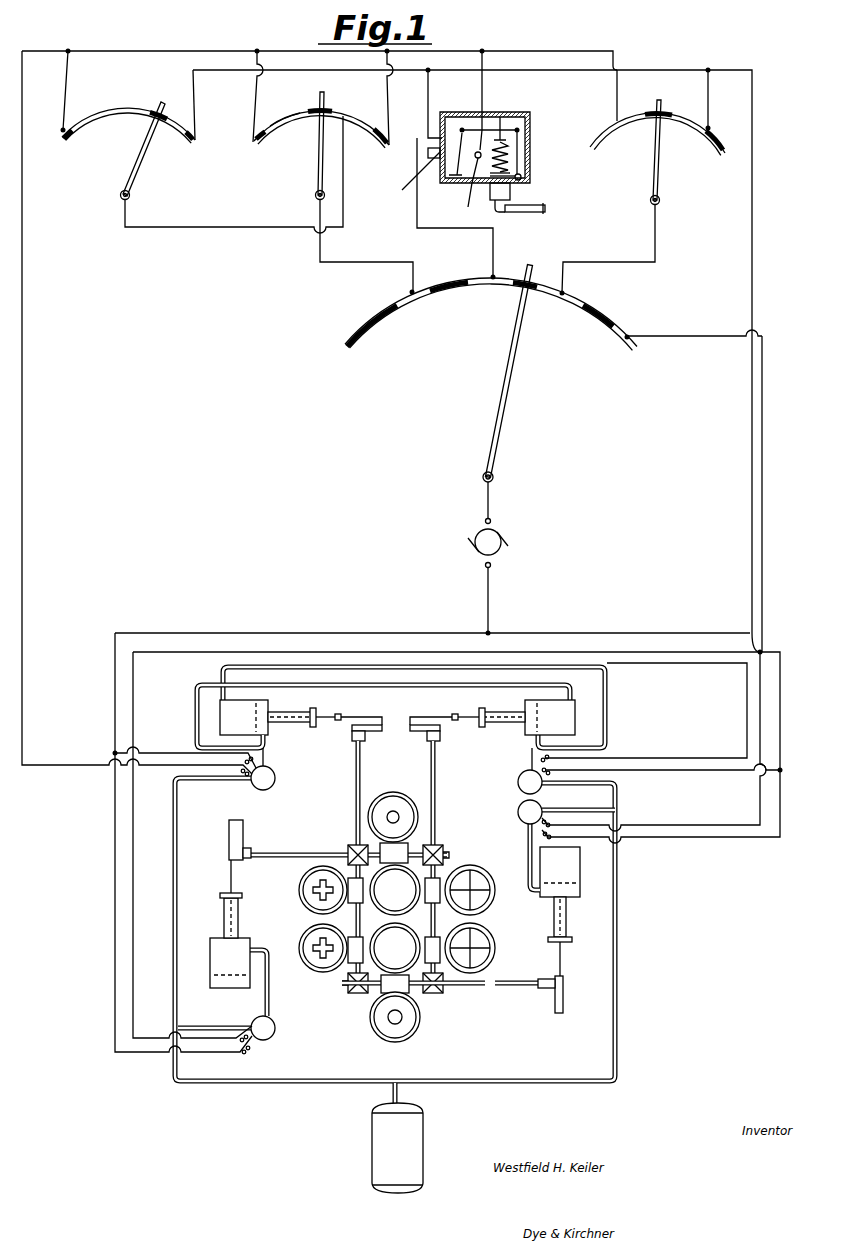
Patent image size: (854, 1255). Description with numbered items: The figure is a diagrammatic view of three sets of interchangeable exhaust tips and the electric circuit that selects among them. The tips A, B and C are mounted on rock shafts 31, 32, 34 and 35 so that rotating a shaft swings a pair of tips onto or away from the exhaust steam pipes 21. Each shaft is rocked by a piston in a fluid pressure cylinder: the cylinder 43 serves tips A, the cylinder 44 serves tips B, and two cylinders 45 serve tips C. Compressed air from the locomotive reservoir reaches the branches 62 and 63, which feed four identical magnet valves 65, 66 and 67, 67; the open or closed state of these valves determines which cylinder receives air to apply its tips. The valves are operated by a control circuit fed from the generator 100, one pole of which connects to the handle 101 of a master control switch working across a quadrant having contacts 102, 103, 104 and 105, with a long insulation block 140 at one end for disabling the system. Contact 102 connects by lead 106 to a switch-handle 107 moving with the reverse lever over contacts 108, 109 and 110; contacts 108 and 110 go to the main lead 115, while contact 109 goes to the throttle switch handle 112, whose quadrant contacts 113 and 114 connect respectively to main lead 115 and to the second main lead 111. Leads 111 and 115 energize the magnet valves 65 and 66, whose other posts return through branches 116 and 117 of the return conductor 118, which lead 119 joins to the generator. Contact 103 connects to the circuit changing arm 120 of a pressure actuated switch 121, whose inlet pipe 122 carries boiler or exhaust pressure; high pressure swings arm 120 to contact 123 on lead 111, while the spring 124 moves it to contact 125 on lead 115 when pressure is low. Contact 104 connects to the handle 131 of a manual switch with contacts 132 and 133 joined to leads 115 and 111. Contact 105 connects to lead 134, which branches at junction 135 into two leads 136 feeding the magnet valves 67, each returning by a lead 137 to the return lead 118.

The exhaust steam pipes 21 is at (395, 919).
The rock shaft 31 is at (430, 810).
The rock shaft 32 is at (357, 798).
The rock shaft 34 is at (305, 853).
The rock shaft 35 is at (520, 988).
The cylinder 43 is at (525, 738).
The cylinder 44 is at (252, 722).
The cylinders 45 is at (245, 990).
The branch 62 is at (554, 1086).
The branch 63 is at (331, 1086).
The magnet valve 65 is at (520, 783).
The magnet valve 66 is at (277, 778).
The magnet valves 67 is at (519, 813).
The generator 100 is at (505, 538).
The handle of master control switch 101 is at (498, 437).
The contact 102 is at (407, 305).
The contact 103 is at (495, 283).
The contact 104 is at (570, 307).
The contact 105 is at (618, 327).
The lead 106 is at (397, 262).
The switch-handle 107 is at (317, 188).
The contact 108 is at (290, 116).
The contact 109 is at (338, 114).
The contact 110 is at (368, 138).
The main lead 111 is at (675, 71).
The switch handle 112 is at (143, 165).
The contact 113 is at (130, 106).
The contact 114 is at (170, 113).
The main lead 115 is at (135, 50).
The branch 116 is at (723, 775).
The branch 117 is at (170, 752).
The return conductor 118 is at (272, 630).
The lead 119 is at (492, 612).
The circuit changing arm 120 is at (448, 185).
The pressure actuated switch 121 is at (532, 147).
The inlet pipe 122 is at (523, 213).
The contact 123 is at (408, 175).
The spring 124 is at (507, 161).
The contact 125 is at (478, 192).
The handle of manual switch 131 is at (663, 181).
The contact 132 is at (633, 113).
The contact 133 is at (714, 140).
The lead 134 is at (767, 485).
The junction 135 is at (770, 643).
The leads 136 is at (133, 1000).
The lead 137 is at (115, 1037).
The insulation block 140 is at (363, 324).
The exhaust pipe caps or tips A is at (485, 907).
The exhaust pipe caps or tips B is at (303, 940).
The tips C is at (397, 792).